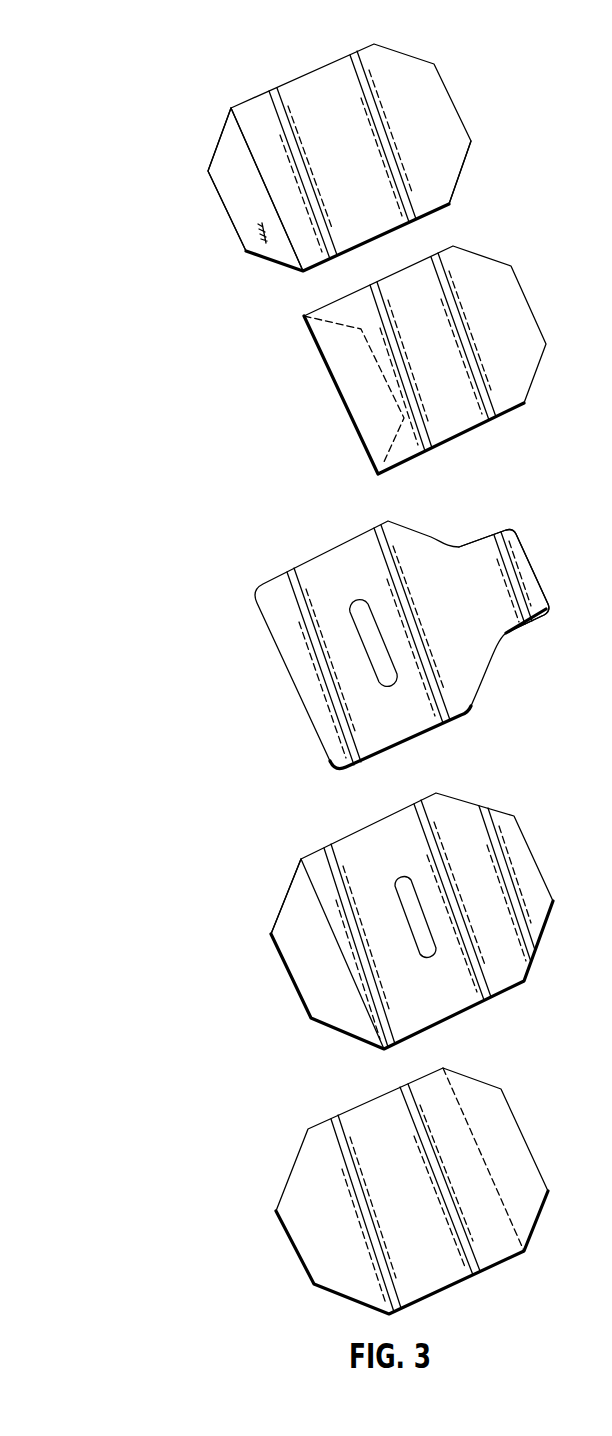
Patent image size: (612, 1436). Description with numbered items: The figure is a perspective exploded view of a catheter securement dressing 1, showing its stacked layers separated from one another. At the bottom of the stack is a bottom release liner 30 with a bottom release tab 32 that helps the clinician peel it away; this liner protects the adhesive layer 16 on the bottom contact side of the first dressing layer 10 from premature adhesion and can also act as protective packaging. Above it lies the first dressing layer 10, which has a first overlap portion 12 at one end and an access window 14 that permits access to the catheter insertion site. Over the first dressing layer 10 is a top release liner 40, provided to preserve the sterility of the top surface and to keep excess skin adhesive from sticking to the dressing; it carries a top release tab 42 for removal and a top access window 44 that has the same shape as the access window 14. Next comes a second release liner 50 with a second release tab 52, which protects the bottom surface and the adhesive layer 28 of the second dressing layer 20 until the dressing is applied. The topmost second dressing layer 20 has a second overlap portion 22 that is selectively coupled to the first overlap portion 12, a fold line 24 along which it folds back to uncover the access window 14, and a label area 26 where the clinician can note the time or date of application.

The catheter securement dressing 1 is at (88, 30).
The first dressing layer 10 is at (504, 968).
The first overlap portion 12 is at (306, 963).
The access window 14 is at (399, 879).
The adhesive layer 16 is at (542, 943).
The second dressing layer 20 is at (409, 71).
The second overlap portion 22 is at (229, 181).
The fold line 24 is at (234, 111).
The label area 26 is at (261, 243).
The adhesive layer 28 is at (473, 161).
The bottom release liner 30 is at (488, 1248).
The bottom release tab 32 is at (464, 1092).
The top release liner 40 is at (458, 691).
The top release tab 42 is at (488, 556).
The top access window 44 is at (361, 615).
The second release liner 50 is at (479, 267).
The second release tab 52 is at (351, 379).